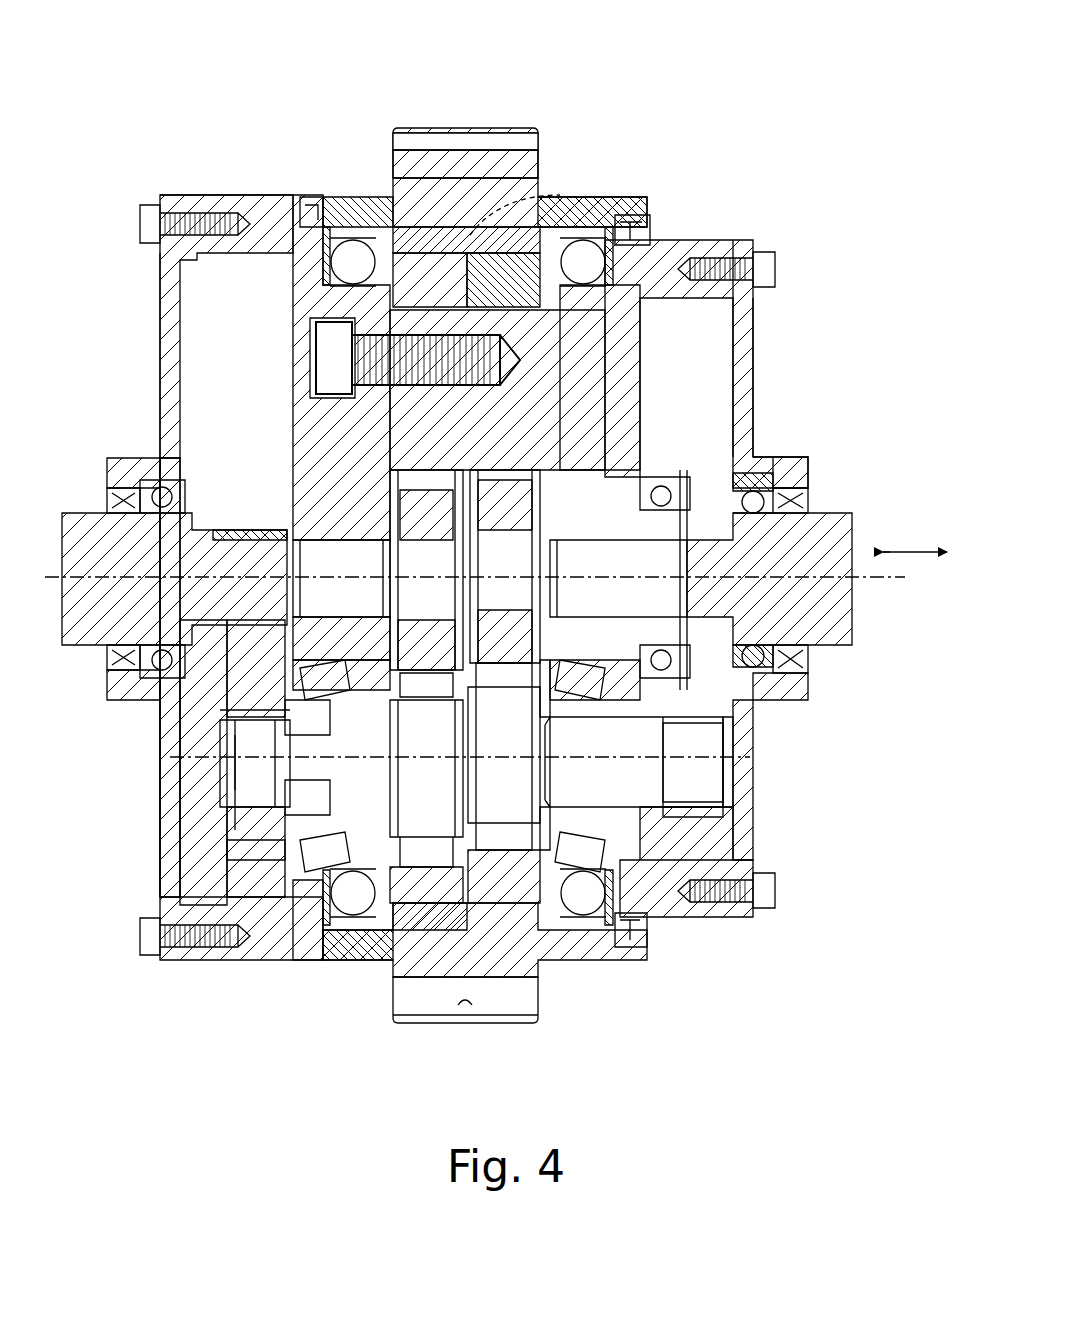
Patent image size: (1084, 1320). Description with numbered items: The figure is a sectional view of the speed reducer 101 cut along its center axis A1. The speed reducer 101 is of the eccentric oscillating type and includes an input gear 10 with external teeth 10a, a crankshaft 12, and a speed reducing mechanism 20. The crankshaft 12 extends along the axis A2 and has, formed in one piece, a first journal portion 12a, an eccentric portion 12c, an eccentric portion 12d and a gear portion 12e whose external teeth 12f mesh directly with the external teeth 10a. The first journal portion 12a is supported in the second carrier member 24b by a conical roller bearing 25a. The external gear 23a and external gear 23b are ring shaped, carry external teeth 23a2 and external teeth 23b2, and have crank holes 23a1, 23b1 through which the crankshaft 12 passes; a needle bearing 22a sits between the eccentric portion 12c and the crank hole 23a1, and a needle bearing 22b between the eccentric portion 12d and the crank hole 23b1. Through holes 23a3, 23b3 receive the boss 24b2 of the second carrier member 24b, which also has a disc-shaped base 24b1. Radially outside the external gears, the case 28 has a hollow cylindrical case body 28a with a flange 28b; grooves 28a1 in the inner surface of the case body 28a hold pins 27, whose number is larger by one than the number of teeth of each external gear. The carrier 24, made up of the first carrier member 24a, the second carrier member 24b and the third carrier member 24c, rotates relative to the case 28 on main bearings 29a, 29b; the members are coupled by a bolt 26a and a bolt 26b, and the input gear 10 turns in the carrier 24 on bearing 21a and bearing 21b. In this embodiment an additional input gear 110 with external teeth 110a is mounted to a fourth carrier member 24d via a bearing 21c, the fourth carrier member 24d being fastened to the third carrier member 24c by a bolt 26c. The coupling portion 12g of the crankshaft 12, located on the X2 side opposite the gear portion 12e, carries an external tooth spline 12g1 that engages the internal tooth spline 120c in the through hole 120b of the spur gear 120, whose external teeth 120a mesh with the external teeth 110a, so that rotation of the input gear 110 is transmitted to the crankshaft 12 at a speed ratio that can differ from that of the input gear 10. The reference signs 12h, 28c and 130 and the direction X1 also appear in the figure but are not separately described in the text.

The input gear 10 is at (825, 535).
The external teeth 10a is at (710, 440).
The crankshaft 12 is at (685, 812).
The first journal portion 12a is at (705, 745).
The eccentric portion 12c is at (505, 920).
The eccentric portion 12d is at (433, 920).
The gear portion 12e is at (708, 770).
The external teeth 12f is at (700, 810).
The coupling portion 12g is at (228, 782).
The external tooth spline 12g1 is at (222, 712).
The groove 12h is at (236, 812).
The speed reducing mechanism 20 is at (325, 188).
The bearing 21a is at (775, 462).
The bearing 21b is at (645, 488).
The bearing 21c is at (140, 480).
The needle bearing 22a is at (548, 940).
The needle bearing 22b is at (390, 955).
The external gear 23a is at (548, 562).
The crank hole 23a1 is at (505, 540).
The external teeth 23a2 is at (510, 250).
The through hole 23a3 is at (540, 215).
The external gear 23b is at (380, 562).
The crank hole 23b1 is at (428, 530).
The external teeth 23b2 is at (420, 935).
The through hole 23b3 is at (415, 295).
The carrier 24 is at (240, 190).
The first carrier member 24a is at (755, 365).
The second carrier member 24b is at (646, 367).
The disc-shaped base 24b1 is at (636, 405).
The boss 24b2 is at (420, 440).
The third carrier member 24c is at (330, 470).
The fourth carrier member 24d is at (158, 300).
The conical roller bearing 25a is at (648, 928).
The bolt 26a is at (778, 272).
The bolt 26b is at (330, 358).
The bolt 26c is at (138, 218).
The pins 27 is at (443, 240).
The case 28 is at (487, 128).
The case body 28a is at (343, 203).
The grooves 28a1 is at (500, 190).
The flange 28b is at (436, 130).
The lower rotor recess 28c is at (466, 1010).
The main bearing 29a is at (640, 245).
The main bearing 29b is at (320, 197).
The speed reducer 101 is at (778, 158).
The input gear 110 is at (98, 540).
The external teeth 110a is at (240, 533).
The spur gear 120 is at (290, 900).
The external teeth 120a is at (285, 905).
The through hole 120b is at (240, 850).
The internal tooth spline 120c is at (288, 783).
The housing cover 130 is at (158, 360).
The center axis A1 is at (880, 584).
The axis A2 is at (190, 757).
The first axial direction X1 is at (926, 536).
The X2 direction X2 is at (876, 536).